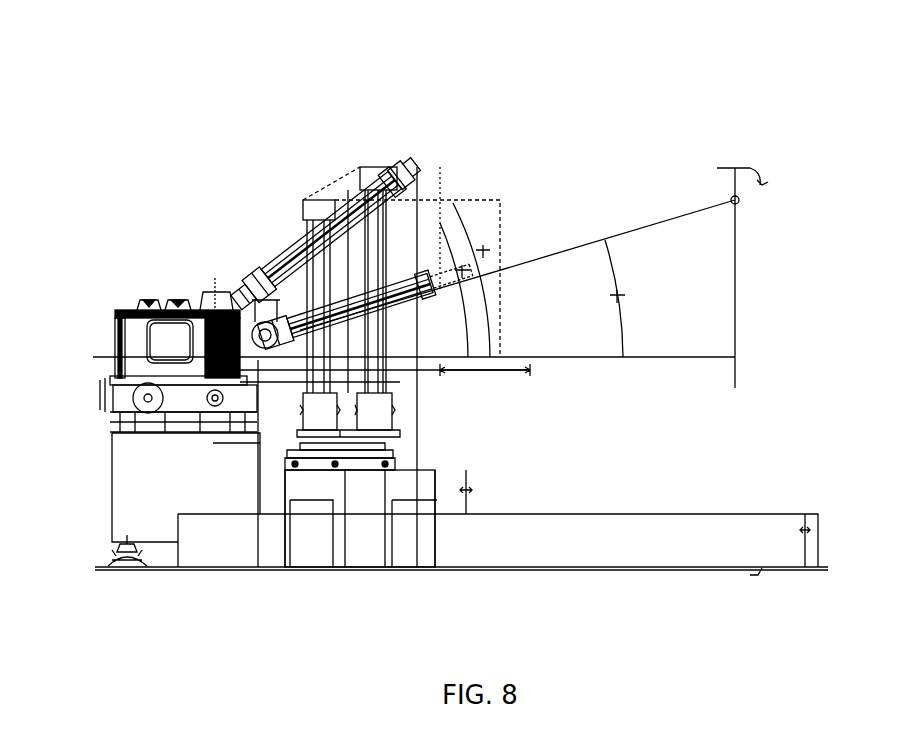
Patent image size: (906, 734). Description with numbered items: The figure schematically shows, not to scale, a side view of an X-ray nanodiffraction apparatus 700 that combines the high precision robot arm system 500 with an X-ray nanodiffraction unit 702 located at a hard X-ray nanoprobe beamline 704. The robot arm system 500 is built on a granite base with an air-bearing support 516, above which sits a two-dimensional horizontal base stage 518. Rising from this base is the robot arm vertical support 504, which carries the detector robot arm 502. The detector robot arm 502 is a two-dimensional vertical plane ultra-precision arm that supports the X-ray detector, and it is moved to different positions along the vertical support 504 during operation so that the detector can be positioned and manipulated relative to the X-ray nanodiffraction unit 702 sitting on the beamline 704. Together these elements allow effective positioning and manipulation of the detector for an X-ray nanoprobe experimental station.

The X-ray nanodiffraction apparatus 700 is at (334, 32).
The high precision robot arm system 500 is at (393, 125).
The detector robot arm 502 is at (400, 165).
The robot arm vertical support 504 is at (304, 245).
The granite base with an air-bearing support 516 is at (390, 491).
The 2D horizontal base stage 518 is at (415, 452).
The X-ray nanodiffraction unit 702 is at (168, 280).
The beamline 704 is at (90, 352).